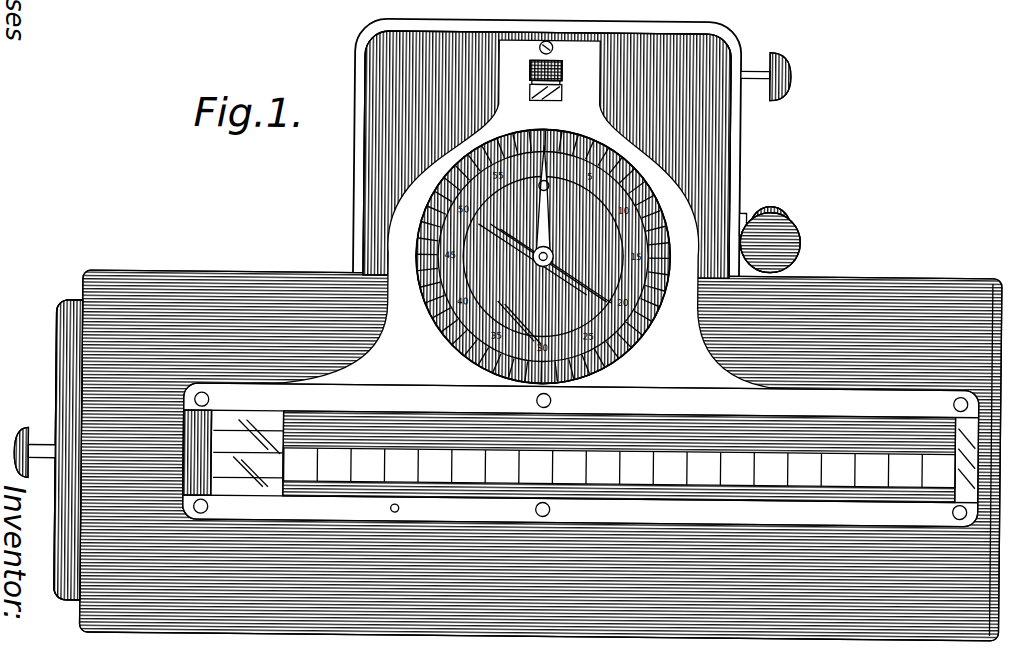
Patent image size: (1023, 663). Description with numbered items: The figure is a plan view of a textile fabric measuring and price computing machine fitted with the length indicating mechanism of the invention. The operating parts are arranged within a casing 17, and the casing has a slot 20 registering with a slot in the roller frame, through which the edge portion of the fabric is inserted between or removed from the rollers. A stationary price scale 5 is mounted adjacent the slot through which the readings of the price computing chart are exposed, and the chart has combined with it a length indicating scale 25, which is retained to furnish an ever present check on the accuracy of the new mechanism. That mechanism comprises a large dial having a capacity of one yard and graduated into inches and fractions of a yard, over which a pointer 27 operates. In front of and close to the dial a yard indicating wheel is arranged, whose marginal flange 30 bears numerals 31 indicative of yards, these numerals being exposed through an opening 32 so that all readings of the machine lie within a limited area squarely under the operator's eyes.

The stationary price scale 5 is at (648, 496).
The casing 17 is at (740, 158).
The slot 20 is at (697, 335).
The length indicating scale 25 is at (215, 436).
The pointer 27 is at (550, 224).
The marginal flange 30 is at (530, 64).
The numerals 31 is at (528, 72).
The opening 32 is at (535, 88).